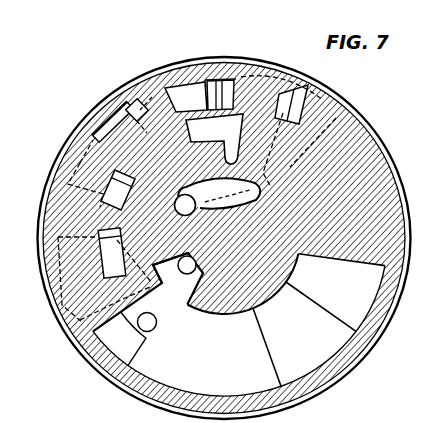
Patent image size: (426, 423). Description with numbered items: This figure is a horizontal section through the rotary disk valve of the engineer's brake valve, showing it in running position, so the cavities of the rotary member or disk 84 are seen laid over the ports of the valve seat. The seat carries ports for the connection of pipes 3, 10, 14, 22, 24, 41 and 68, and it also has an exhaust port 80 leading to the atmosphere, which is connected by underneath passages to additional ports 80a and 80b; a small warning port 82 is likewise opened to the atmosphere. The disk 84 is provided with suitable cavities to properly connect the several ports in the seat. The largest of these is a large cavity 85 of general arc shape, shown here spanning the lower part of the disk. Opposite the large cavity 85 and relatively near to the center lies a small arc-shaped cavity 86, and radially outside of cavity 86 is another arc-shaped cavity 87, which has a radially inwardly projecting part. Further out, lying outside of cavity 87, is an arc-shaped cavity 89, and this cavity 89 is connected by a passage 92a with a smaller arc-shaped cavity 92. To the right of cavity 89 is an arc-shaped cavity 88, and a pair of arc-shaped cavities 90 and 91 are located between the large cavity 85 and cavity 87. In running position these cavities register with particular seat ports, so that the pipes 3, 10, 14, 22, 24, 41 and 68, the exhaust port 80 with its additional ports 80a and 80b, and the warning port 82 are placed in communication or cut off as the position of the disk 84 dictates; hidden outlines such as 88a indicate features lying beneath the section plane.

The pipe 3 is at (72, 291).
The pipe 10 is at (187, 265).
The pipe 14 is at (335, 298).
The pipe 22 is at (214, 78).
The pipe 24 is at (78, 162).
The pipe 41 is at (128, 338).
The pipe 68 is at (147, 322).
The exhaust port 80 is at (343, 100).
The additional port 80a is at (189, 204).
The additional port 80b is at (231, 79).
The warning port 82 is at (155, 288).
The rotary member or disk 84 is at (320, 384).
The large cavity 85 is at (239, 324).
The small arc-shaped cavity 86 is at (219, 193).
The arc-shaped cavity 87 is at (214, 139).
The arc-shaped cavity 88 is at (296, 95).
The hidden block 88a is at (261, 85).
The arc-shaped cavity 89 is at (186, 97).
The arc-shaped cavity 90 is at (112, 253).
The arc-shaped cavity 91 is at (118, 190).
The smaller arc-shaped cavity 92 is at (113, 121).
The passage 92a is at (152, 96).